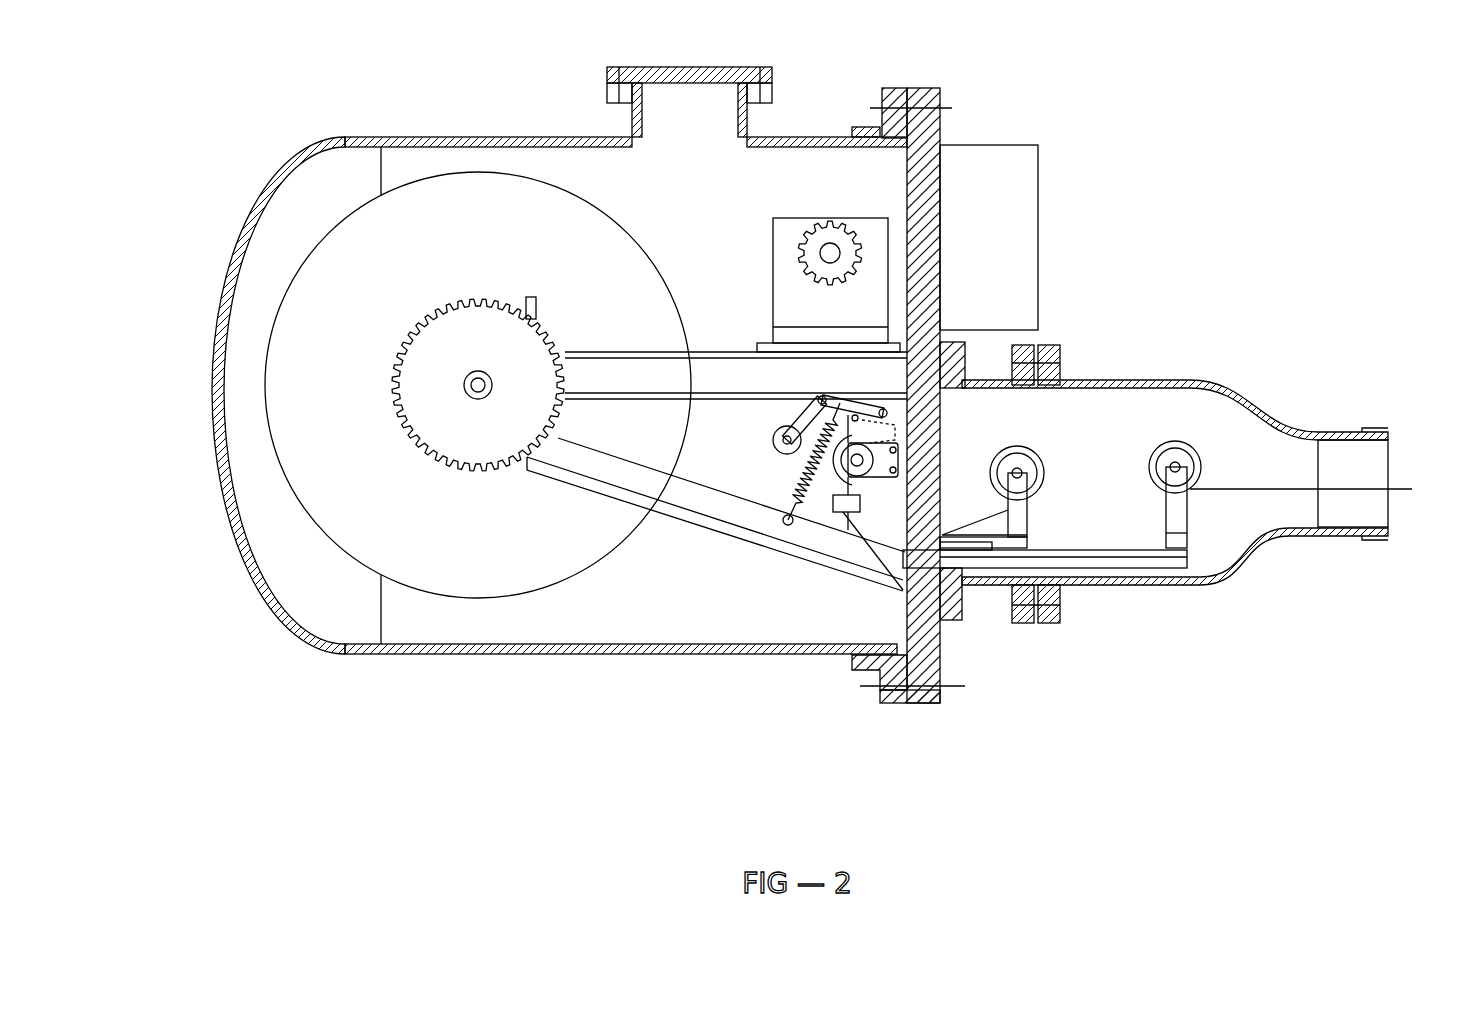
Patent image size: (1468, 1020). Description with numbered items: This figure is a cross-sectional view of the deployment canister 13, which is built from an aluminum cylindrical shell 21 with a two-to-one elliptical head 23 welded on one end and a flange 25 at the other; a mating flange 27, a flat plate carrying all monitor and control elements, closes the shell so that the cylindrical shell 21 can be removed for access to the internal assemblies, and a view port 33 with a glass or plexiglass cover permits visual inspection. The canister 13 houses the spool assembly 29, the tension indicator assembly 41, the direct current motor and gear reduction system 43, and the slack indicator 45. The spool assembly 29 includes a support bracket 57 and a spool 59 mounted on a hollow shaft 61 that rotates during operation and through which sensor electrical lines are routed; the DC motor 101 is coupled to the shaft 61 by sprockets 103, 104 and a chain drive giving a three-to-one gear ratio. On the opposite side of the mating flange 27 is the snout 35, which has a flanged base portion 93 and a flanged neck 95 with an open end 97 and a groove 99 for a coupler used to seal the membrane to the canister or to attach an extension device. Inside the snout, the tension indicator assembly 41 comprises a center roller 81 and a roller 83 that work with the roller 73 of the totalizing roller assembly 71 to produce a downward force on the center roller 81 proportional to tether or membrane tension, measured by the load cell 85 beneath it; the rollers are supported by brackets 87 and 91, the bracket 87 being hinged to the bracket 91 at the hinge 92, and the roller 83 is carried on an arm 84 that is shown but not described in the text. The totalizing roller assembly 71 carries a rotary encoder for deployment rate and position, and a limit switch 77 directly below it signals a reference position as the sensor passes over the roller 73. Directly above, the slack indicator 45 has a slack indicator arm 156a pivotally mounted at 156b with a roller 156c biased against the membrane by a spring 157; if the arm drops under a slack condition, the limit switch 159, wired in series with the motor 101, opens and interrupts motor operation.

The deployment canister 13 is at (409, 733).
The cylindrical shell 21 is at (577, 655).
The elliptical head 23 is at (275, 622).
The flange 25 is at (855, 668).
The mating flange 27 is at (939, 653).
The spool assembly 29 is at (671, 550).
The view port 33 is at (787, 64).
The snout 35 is at (1237, 378).
The tension indicator assembly 41 is at (1041, 440).
The direct current motor and gear reduction system 43 is at (854, 207).
The slack indicator 45 is at (888, 395).
The support bracket 57 is at (785, 530).
The spool 59 is at (513, 580).
The hollow shaft 61 is at (488, 398).
The totalizing roller assembly 71 is at (907, 447).
The roller 73 is at (899, 477).
The limit switch 77 is at (835, 512).
The center roller 81 is at (1045, 482).
The roller 83 is at (1193, 443).
The roller arm 84 is at (1186, 507).
The load cell 85 is at (978, 547).
The bracket 87 is at (1030, 523).
The bracket 91 is at (1123, 565).
The hinge 92 is at (960, 547).
The flanged base portion 93 is at (1060, 345).
The flanged neck 95 is at (1208, 583).
The open end 97 is at (1392, 510).
The groove 99 is at (1362, 532).
The DC motor 101 is at (772, 238).
The sprocket 103 is at (802, 266).
The sprocket 104 is at (543, 328).
The slack indicator arm 156a is at (818, 398).
The pivot 156b is at (962, 365).
The roller 156c is at (773, 438).
The spring 157 is at (645, 508).
The limit switch 159 is at (900, 447).